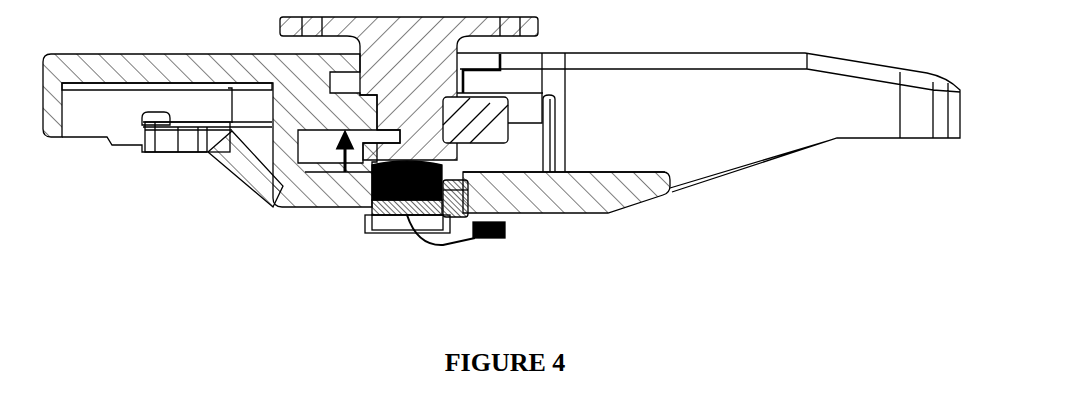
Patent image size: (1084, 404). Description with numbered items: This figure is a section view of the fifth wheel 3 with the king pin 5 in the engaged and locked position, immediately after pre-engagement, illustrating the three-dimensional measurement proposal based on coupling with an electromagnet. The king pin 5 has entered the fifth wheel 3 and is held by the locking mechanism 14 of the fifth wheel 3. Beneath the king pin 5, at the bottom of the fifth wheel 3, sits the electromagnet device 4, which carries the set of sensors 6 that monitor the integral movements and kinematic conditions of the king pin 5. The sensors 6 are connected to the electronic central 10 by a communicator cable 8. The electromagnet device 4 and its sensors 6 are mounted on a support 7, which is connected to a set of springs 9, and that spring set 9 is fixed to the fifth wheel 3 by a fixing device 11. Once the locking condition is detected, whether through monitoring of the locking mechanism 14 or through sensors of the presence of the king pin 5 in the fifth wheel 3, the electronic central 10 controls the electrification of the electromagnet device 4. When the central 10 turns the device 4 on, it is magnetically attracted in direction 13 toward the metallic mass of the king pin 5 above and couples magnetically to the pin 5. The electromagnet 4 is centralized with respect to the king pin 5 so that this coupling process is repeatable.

The fifth wheel 3 is at (221, 130).
The electromagnet device 4 is at (372, 198).
The king pin 5 is at (409, 88).
The set of sensors 6 is at (372, 210).
The support 7 is at (382, 235).
The communicator cable 8 is at (425, 240).
The set of springs 9 is at (463, 217).
The electronic central 10 is at (497, 238).
The fixing device 11 is at (522, 217).
The magnetic attraction 13 is at (338, 160).
The locking mechanism 14 is at (475, 120).